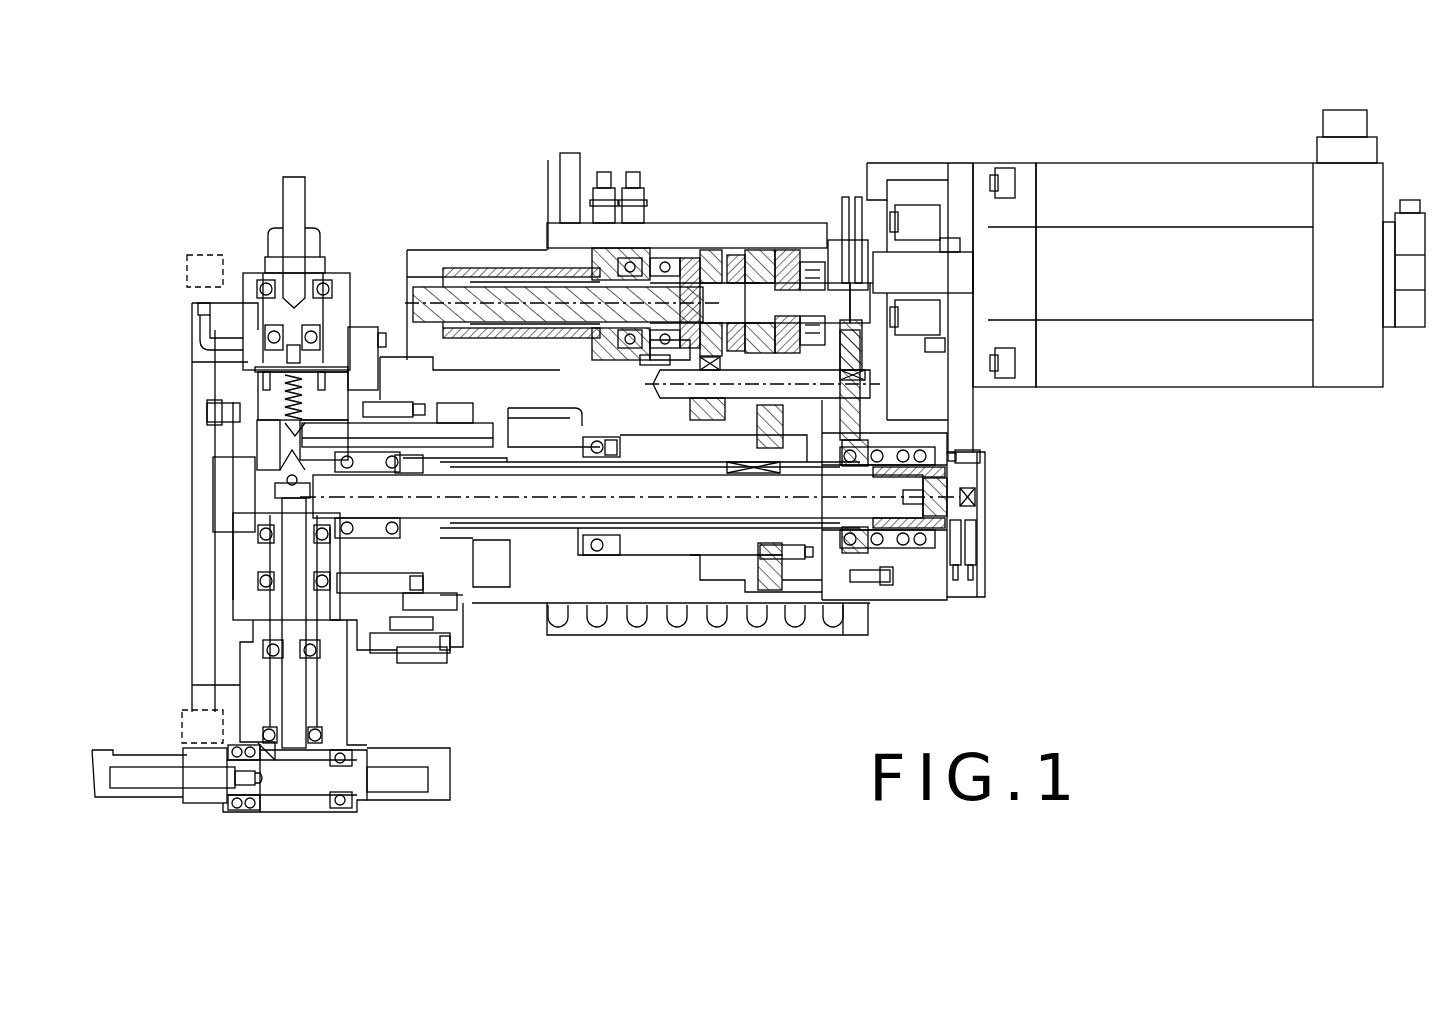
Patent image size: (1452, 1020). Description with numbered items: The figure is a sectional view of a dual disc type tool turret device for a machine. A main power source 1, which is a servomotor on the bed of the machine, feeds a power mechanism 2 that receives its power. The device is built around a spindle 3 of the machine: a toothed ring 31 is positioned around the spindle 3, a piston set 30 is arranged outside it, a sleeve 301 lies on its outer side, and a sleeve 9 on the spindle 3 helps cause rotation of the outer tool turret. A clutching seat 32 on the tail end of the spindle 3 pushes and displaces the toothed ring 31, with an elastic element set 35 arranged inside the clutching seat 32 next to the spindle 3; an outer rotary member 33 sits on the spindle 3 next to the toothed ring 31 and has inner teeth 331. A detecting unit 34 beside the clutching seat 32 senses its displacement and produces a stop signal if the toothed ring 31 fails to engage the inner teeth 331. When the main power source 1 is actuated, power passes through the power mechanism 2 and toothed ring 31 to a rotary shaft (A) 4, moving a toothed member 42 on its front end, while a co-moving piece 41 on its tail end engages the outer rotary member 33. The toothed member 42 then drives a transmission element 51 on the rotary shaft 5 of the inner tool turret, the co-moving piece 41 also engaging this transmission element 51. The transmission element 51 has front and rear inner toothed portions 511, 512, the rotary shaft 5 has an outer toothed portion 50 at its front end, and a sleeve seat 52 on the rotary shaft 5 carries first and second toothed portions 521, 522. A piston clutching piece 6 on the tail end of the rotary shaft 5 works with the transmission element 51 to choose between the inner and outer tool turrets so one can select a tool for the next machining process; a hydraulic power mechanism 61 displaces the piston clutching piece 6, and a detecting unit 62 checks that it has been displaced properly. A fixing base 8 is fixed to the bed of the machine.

The main power source 1 is at (1113, 163).
The power mechanism 2 is at (923, 427).
The spindle 3 is at (632, 505).
The rotary shaft (A) 4 is at (652, 388).
The rotary shaft 5 is at (487, 292).
The piston clutching piece 6 is at (805, 248).
The fixing base 8 is at (735, 255).
The sleeve 9 is at (781, 548).
The piston set 30 is at (540, 538).
The toothed ring 31 is at (935, 465).
The clutching seat 32 is at (965, 483).
The outer rotary member 33 is at (852, 600).
The detecting unit 34 is at (970, 538).
The elastic element set 35 is at (975, 500).
The co-moving piece 41 is at (830, 425).
The toothed member 42 is at (707, 420).
The outer toothed portion 50 is at (592, 345).
The transmission element 51 is at (700, 258).
The sleeve seat 52 is at (752, 250).
The power mechanism 61 is at (800, 262).
The detecting unit 62 is at (848, 270).
The sleeve 301 is at (572, 525).
The inner teeth 331 is at (886, 582).
The front inner toothed portion 511 is at (540, 275).
The rear inner toothed portion 512 is at (710, 250).
The first toothed portion 521 is at (660, 348).
The second toothed portion 522 is at (782, 250).